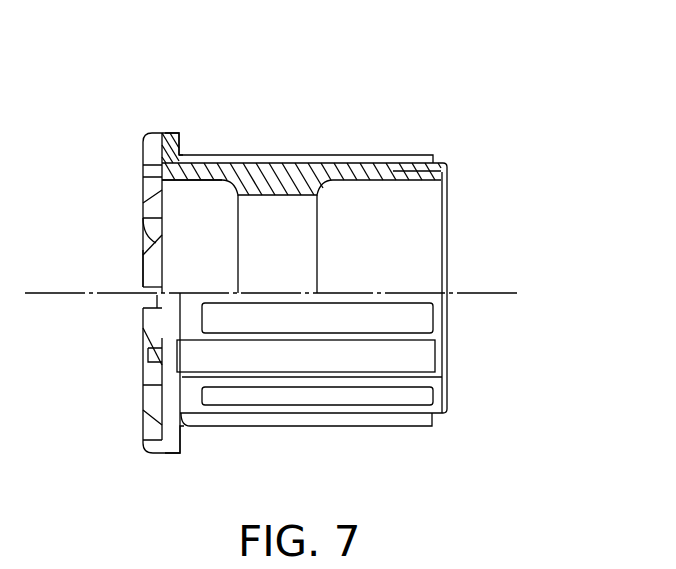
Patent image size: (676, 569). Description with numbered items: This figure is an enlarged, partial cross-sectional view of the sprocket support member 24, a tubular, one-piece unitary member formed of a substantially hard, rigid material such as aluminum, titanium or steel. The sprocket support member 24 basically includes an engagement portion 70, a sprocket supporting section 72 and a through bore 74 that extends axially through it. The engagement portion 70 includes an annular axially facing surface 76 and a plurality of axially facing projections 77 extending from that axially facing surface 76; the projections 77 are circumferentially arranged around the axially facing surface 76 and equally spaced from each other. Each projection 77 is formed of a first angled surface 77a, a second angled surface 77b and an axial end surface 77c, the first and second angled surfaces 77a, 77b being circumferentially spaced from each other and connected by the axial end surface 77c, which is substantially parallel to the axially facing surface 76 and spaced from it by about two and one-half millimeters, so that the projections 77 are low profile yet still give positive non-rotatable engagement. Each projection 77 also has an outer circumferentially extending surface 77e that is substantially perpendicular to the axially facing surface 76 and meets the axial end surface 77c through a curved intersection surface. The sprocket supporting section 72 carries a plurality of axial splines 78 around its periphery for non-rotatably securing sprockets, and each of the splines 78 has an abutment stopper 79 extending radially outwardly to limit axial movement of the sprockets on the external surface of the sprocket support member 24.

The sprocket support member 24 is at (330, 255).
The engagement portion 70 is at (153, 120).
The sprocket supporting section 72 is at (336, 148).
The through bore 74 is at (400, 236).
The annular axially facing surface 76 is at (141, 218).
The axially facing projections 77 is at (133, 327).
The first angled surface 77a is at (163, 292).
The second angled surface 77b is at (162, 363).
The axial end surface 77c is at (134, 392).
The outer circumferentially extending surface 77e is at (152, 325).
The axial splines 78 is at (425, 355).
The abutment stopper 79 is at (172, 133).